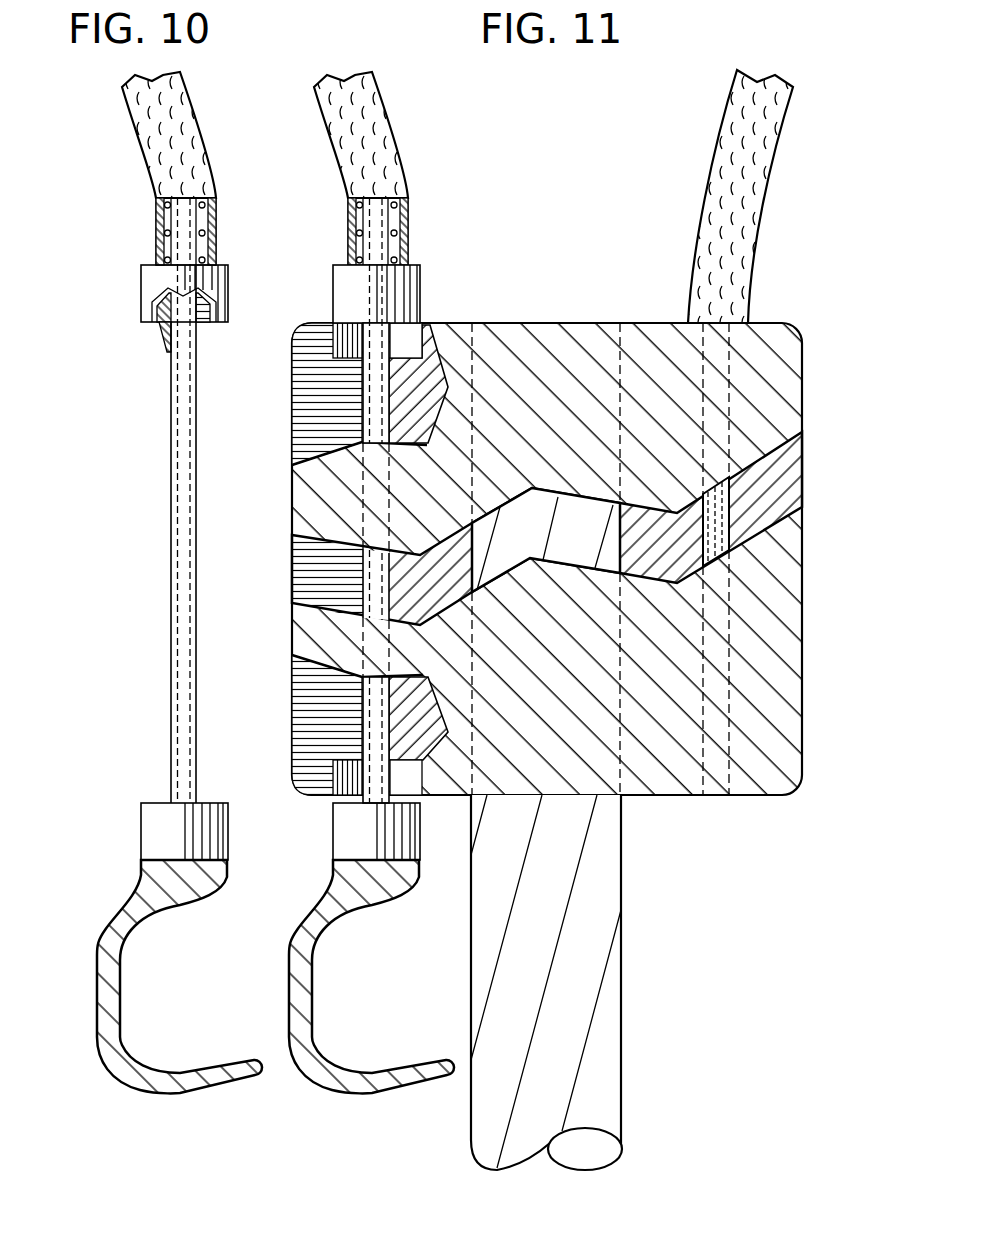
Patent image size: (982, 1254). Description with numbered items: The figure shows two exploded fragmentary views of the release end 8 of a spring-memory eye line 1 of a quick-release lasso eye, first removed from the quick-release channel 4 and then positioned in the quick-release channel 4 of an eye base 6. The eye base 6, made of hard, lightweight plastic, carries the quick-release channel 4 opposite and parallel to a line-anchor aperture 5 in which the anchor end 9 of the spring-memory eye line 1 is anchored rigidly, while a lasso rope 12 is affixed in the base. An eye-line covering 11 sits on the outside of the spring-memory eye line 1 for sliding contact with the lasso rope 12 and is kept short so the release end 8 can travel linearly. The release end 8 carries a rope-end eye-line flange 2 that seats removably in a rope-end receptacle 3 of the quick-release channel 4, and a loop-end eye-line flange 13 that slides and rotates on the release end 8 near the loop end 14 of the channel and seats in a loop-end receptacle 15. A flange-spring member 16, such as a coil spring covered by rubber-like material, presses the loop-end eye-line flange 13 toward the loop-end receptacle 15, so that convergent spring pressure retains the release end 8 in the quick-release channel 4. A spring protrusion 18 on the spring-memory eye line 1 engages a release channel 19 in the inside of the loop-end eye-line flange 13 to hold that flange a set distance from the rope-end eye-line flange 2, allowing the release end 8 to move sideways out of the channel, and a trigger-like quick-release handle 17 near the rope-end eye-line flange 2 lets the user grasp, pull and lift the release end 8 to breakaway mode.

In FIG. 10, the spring-memory eye line 1 is at (178, 237).
In FIG. 11, the spring-memory eye line 1 is at (378, 238).
In FIG. 10, the rope-end eye-line flange 2 is at (170, 822).
In FIG. 11, the rope-end eye-line flange 2 is at (378, 845).
In FIG. 11, the rope-end receptacle 3 is at (350, 772).
In FIG. 11, the quick-release channel 4 is at (338, 420).
In FIG. 11, the line-anchor aperture 5 is at (715, 515).
In FIG. 11, the eye base 6 is at (790, 323).
In FIG. 10, the release end 8 is at (185, 572).
In FIG. 11, the release end 8 is at (378, 578).
In FIG. 11, the anchor end 9 is at (730, 560).
In FIG. 10, the eye-line covering 11 is at (152, 118).
In FIG. 11, the eye-line covering 11 is at (367, 115).
In FIG. 11, the lasso rope 12 is at (552, 962).
In FIG. 10, the loop-end eye-line flange 13 is at (158, 287).
In FIG. 11, the loop-end eye-line flange 13 is at (368, 287).
In FIG. 11, the loop end 14 is at (435, 323).
In FIG. 11, the loop-end receptacle 15 is at (343, 378).
In FIG. 10, the flange-spring member 16 is at (160, 212).
In FIG. 11, the flange-spring member 16 is at (410, 212).
In FIG. 10, the quick-release handle 17 is at (193, 1085).
In FIG. 11, the quick-release handle 17 is at (395, 1085).
In FIG. 10, the spring protrusion 18 is at (166, 335).
In FIG. 11, the spring protrusion 18 is at (348, 340).
In FIG. 10, the release channel 19 is at (213, 303).